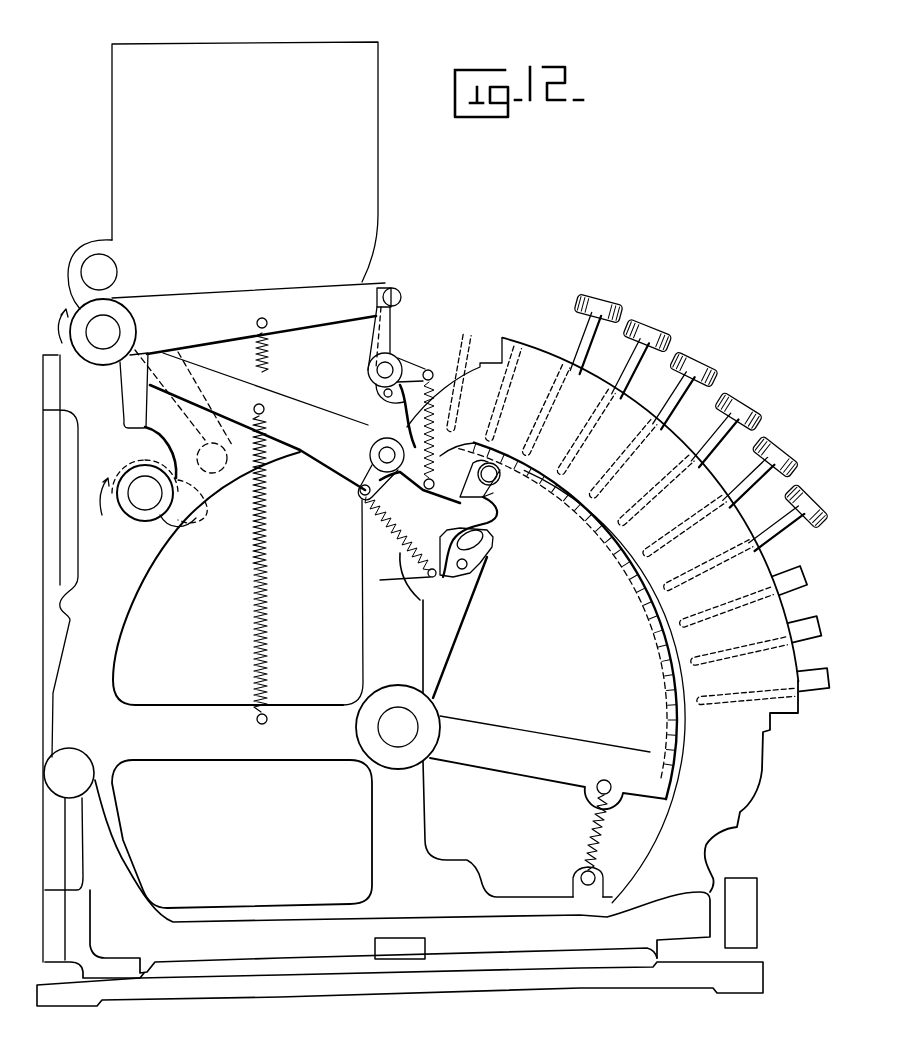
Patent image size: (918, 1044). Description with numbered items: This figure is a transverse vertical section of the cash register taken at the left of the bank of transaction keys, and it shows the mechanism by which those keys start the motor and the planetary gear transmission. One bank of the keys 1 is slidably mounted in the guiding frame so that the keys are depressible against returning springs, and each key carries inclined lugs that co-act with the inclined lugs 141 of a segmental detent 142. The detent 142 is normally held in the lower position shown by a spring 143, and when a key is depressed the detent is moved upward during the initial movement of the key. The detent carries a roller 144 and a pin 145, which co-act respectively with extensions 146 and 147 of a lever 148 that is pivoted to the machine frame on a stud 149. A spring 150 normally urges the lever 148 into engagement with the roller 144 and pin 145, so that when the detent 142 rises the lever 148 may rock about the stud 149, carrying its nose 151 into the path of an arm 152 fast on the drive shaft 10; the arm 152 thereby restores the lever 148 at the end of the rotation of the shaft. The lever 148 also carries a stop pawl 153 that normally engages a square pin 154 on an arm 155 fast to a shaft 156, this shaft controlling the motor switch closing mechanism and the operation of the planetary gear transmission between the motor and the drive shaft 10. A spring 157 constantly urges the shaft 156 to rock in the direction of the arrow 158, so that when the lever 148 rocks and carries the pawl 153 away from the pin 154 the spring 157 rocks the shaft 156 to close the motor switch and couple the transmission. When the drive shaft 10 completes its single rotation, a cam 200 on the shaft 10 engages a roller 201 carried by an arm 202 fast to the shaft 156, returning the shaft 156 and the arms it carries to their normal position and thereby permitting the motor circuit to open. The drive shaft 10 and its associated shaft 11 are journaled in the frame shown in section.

The keys 1 is at (703, 367).
The drive shaft 10 is at (143, 503).
The shaft 11 is at (405, 722).
The inclined lugs 141 is at (613, 582).
The segmental detent 142 is at (485, 768).
The spring 143 is at (594, 836).
The roller 144 is at (515, 420).
The pin 145 is at (486, 540).
The extension 146 is at (432, 481).
The extension 147 is at (485, 560).
The lever 148 is at (312, 412).
The stud 149 is at (380, 462).
The spring 150 is at (258, 625).
The nose 151 is at (124, 410).
The arm 152 is at (150, 453).
The stop pawl 153 is at (393, 341).
The square pin 154 is at (400, 295).
The arm 155 is at (294, 300).
The shaft 156 is at (105, 325).
The spring 157 is at (292, 345).
The arrow 158 is at (62, 330).
The cam 200 is at (170, 520).
The roller 201 is at (214, 477).
The arm 202 is at (215, 441).